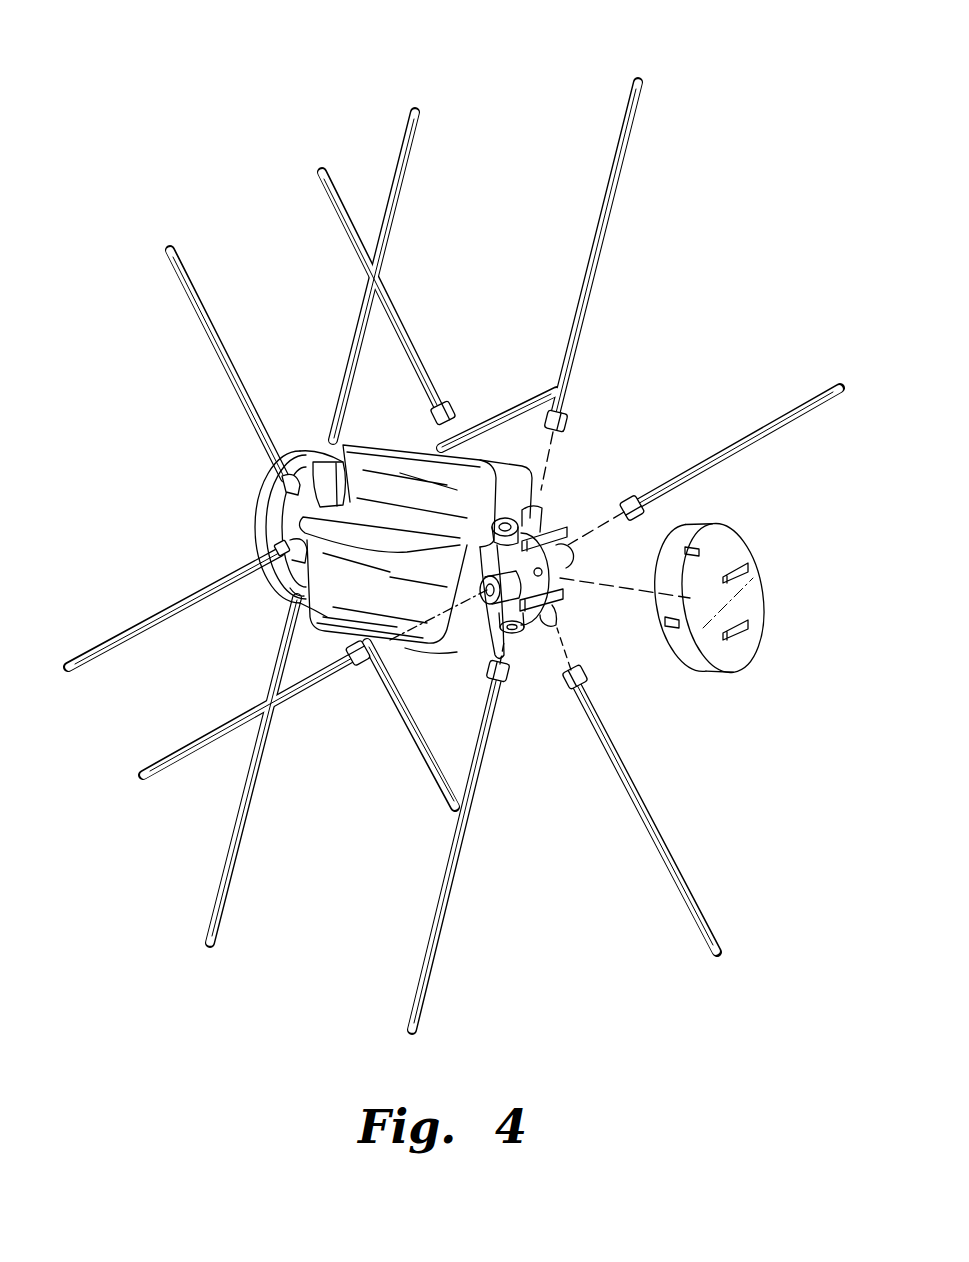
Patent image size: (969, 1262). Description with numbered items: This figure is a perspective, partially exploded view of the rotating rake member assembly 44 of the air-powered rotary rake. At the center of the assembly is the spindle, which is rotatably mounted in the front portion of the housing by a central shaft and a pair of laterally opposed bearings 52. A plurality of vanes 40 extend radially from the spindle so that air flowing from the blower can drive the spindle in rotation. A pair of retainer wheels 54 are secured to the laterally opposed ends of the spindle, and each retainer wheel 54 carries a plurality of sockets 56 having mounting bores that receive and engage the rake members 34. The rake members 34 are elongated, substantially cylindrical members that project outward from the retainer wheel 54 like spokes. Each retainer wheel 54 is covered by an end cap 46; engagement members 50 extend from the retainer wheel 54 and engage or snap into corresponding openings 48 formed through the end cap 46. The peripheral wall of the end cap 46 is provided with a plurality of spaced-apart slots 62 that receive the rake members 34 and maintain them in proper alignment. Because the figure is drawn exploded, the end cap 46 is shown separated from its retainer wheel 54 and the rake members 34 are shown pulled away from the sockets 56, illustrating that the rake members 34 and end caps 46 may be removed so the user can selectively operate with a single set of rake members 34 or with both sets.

The rake members 34 is at (406, 132).
The vanes 40 is at (360, 447).
The rotating rake member assembly 44 is at (804, 90).
The end cap 46 is at (758, 534).
The openings 48 is at (752, 578).
The engagement members 50 is at (575, 530).
The bearings 52 is at (275, 598).
The retainer wheel 54 is at (279, 495).
The sockets 56 is at (494, 526).
The slots 62 is at (270, 548).